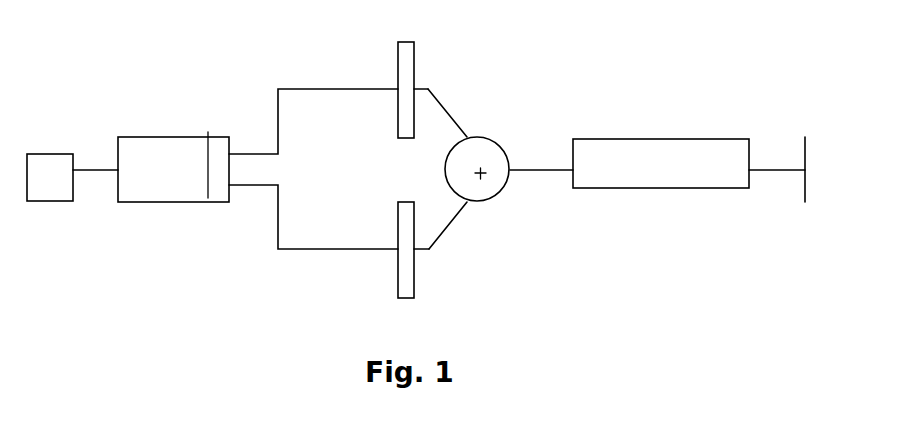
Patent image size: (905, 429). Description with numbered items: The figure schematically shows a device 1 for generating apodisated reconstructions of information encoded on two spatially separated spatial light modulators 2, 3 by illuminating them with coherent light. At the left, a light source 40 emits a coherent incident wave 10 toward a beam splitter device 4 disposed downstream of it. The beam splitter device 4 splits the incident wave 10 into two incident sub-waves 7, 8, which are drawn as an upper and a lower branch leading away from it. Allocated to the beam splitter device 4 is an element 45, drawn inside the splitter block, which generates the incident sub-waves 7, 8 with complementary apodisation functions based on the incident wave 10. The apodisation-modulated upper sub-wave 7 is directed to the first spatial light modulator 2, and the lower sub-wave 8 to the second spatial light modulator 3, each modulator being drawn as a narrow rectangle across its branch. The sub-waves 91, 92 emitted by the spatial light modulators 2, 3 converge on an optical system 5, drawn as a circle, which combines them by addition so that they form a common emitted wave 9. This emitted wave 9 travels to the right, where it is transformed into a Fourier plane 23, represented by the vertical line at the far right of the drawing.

The device 1 is at (612, 74).
The spatial light modulator 2 is at (409, 79).
The spatial light modulator 3 is at (410, 265).
The beam splitter device 4 is at (176, 150).
The optical system 5 is at (475, 185).
The incident sub-wave 7 is at (316, 85).
The incident sub-wave 8 is at (314, 250).
The common emitted wave 9 is at (518, 167).
The coherent incident wave 10 is at (95, 159).
The Fourier plane 23 is at (805, 108).
The light source 40 is at (48, 170).
The element 45 is at (219, 148).
The sub-wave 91 is at (443, 100).
The sub-wave 92 is at (442, 229).